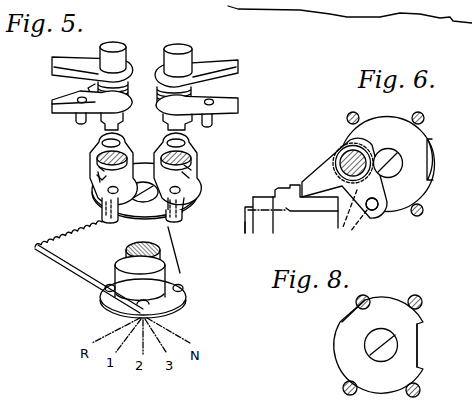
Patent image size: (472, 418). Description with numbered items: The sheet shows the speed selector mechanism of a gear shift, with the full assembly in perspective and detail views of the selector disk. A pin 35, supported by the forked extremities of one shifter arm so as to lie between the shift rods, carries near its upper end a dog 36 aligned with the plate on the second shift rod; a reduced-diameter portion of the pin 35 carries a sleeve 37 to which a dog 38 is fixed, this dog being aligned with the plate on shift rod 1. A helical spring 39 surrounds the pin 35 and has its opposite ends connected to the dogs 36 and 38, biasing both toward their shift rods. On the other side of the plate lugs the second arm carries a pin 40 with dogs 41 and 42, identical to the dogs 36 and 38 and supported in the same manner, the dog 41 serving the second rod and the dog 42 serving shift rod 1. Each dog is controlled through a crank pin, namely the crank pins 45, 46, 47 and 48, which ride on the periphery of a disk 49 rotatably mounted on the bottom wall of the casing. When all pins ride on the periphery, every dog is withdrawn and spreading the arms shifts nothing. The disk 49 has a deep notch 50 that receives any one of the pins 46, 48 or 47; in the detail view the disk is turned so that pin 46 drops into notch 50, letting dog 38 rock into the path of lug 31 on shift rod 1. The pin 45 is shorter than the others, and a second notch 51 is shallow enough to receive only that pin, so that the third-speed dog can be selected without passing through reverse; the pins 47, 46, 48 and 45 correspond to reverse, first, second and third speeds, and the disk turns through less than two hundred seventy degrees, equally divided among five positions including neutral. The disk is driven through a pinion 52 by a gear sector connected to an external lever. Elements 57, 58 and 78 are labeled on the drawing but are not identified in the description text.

In FIG. 6, the shift rod 1 is at (249, 223).
In FIG. 6, the lug 31 is at (290, 187).
In FIG. 5, the pin 35 is at (111, 42).
In FIG. 6, the pin 35 is at (350, 148).
In FIG. 5, the dog 36 is at (60, 64).
In FIG. 5, the sleeve 37 is at (103, 126).
In FIG. 5, the dog 38 is at (60, 108).
In FIG. 6, the dog 38 is at (326, 178).
In FIG. 5, the helical spring 39 is at (86, 88).
In FIG. 5, the pin 40 is at (173, 49).
In FIG. 5, the dog 41 is at (238, 66).
In FIG. 5, the dog 42 is at (238, 108).
In FIG. 5, the crank pin 45 is at (102, 144).
In FIG. 6, the crank pin 45 is at (349, 113).
In FIG. 8, the crank pin 45 is at (360, 296).
In FIG. 5, the crank pin 46 is at (102, 209).
In FIG. 6, the crank pin 46 is at (372, 210).
In FIG. 8, the crank pin 46 is at (352, 395).
In FIG. 5, the crank pin 47 is at (185, 143).
In FIG. 6, the crank pin 47 is at (424, 118).
In FIG. 8, the crank pin 47 is at (422, 302).
In FIG. 5, the crank pin 48 is at (179, 216).
In FIG. 6, the crank pin 48 is at (417, 216).
In FIG. 8, the crank pin 48 is at (417, 396).
In FIG. 5, the disk 49 is at (128, 220).
In FIG. 6, the disk 49 is at (427, 184).
In FIG. 8, the disk 49 is at (335, 349).
In FIG. 5, the notch 50 is at (96, 174).
In FIG. 6, the notch 50 is at (362, 213).
In FIG. 8, the notch 50 is at (418, 343).
In FIG. 5, the second notch 51 is at (184, 205).
In FIG. 6, the second notch 51 is at (430, 157).
In FIG. 8, the second notch 51 is at (350, 310).
In FIG. 5, the pinion 52 is at (66, 270).
In FIG. 5, the stop lug 57 is at (76, 118).
In FIG. 5, the stop lug 58 is at (210, 124).
In FIG. 6, the cover plate 78 is at (297, 0).